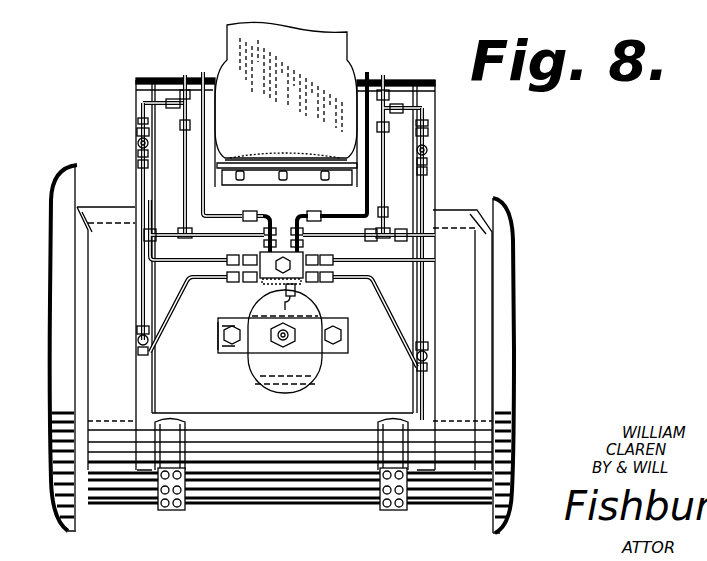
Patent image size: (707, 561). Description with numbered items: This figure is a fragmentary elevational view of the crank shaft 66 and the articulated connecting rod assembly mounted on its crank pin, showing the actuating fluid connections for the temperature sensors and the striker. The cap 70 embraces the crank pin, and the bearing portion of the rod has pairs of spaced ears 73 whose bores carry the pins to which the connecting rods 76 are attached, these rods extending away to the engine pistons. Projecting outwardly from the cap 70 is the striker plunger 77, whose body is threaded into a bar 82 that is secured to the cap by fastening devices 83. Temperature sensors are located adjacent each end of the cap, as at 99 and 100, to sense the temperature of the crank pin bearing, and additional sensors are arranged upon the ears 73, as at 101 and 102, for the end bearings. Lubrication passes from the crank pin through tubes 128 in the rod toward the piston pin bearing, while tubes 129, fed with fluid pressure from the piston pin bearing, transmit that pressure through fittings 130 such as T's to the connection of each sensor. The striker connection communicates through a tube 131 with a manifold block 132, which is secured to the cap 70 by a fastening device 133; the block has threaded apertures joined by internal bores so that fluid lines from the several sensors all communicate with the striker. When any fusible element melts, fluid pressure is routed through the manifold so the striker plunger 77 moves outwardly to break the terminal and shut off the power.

The crank shaft 66 is at (508, 264).
The cap 70 is at (279, 507).
The ears 73 is at (181, 78).
The connecting rods 76 is at (345, 38).
The striker plunger 77 is at (278, 346).
The bar 82 is at (334, 353).
The fastening devices 83 is at (223, 336).
The temperature sensor location 99 is at (138, 341).
The temperature sensor location 100 is at (427, 356).
The temperature sensor location 101 is at (140, 143).
The temperature sensor location 102 is at (426, 150).
The tubes 128 is at (143, 107).
The tubes 129 is at (183, 112).
The fittings 130 is at (388, 108).
The tube 131 is at (296, 298).
The manifold block 132 is at (303, 257).
The fastening device 133 is at (274, 262).